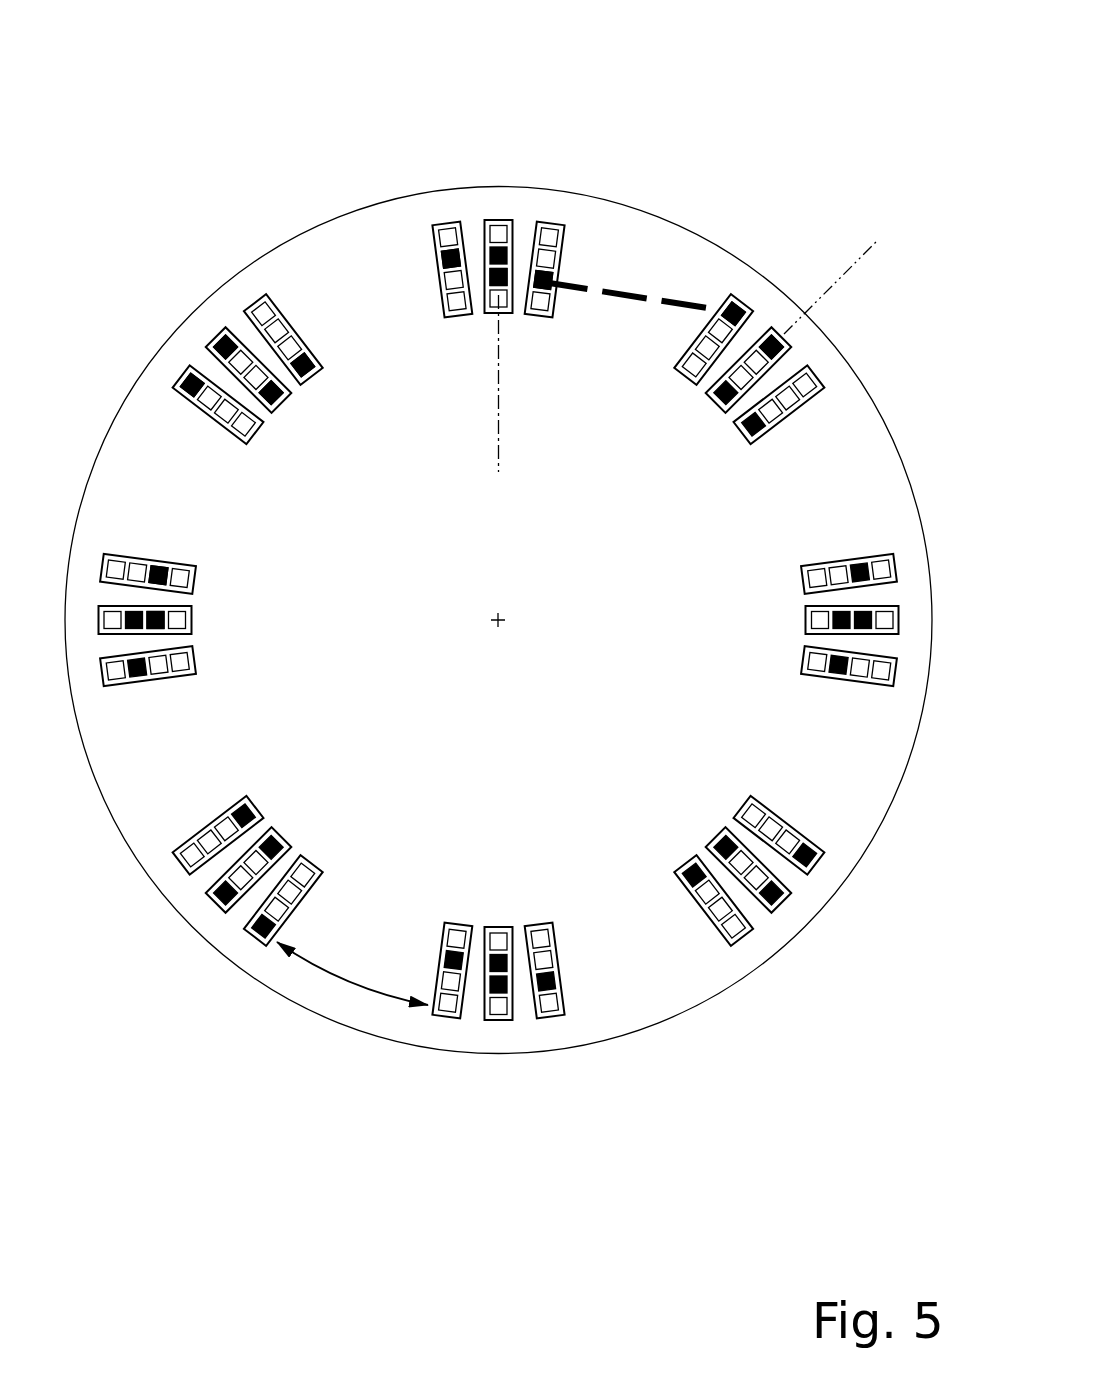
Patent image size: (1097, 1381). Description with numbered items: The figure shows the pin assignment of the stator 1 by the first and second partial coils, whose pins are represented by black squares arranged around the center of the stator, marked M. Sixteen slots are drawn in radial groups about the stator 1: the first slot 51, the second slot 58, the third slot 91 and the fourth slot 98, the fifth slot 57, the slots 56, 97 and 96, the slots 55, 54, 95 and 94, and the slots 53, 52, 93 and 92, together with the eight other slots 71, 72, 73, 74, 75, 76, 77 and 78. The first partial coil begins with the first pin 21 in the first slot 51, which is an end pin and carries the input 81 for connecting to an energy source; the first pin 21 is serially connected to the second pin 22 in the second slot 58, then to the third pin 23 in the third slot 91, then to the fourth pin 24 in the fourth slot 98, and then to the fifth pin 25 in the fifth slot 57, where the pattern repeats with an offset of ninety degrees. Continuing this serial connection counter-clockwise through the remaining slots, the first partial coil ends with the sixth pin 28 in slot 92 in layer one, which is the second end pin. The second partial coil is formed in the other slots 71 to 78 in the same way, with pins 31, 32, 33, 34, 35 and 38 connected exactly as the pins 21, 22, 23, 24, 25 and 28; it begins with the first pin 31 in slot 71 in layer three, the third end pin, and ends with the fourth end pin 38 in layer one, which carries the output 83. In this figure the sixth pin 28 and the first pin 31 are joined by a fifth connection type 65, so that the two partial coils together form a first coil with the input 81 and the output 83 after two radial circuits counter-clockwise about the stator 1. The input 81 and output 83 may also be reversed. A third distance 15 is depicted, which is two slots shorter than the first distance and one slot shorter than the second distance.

The stator 1 is at (594, 47).
The center point M is at (505, 632).
The third distance 15 is at (320, 973).
The first pin 21 is at (504, 288).
The second pin 22 is at (277, 402).
The third pin 23 is at (450, 268).
The fourth pin 24 is at (187, 394).
The fifth pin 25 is at (160, 612).
The sixth pin 28 is at (730, 304).
The first pin of second partial coil 31 is at (553, 296).
The pin 32 is at (308, 376).
The pin 33 is at (486, 224).
The pin 34 is at (215, 340).
The pin 35 is at (166, 574).
The fourth end pin 38 is at (760, 347).
The first slot 51 is at (521, 174).
The slot 52 is at (787, 330).
The slot 53 is at (908, 645).
The slot 54 is at (783, 903).
The slot 55 is at (507, 1025).
The slot 56 is at (213, 903).
The fifth slot 57 is at (100, 640).
The second slot 58 is at (217, 332).
The fifth connection type 65 is at (633, 297).
The slot 71 is at (567, 215).
The slot 72 is at (822, 368).
The slot 73 is at (873, 693).
The slot 74 is at (741, 938).
The slot 75 is at (445, 1020).
The slot 76 is at (178, 868).
The slot 77 is at (125, 547).
The slot 78 is at (255, 297).
The input 81 is at (500, 433).
The output 83 is at (835, 345).
The third slot 91 is at (443, 215).
The slot 92 is at (745, 297).
The slot 93 is at (877, 550).
The slot 94 is at (818, 868).
The slot 95 is at (565, 1022).
The slot 96 is at (255, 938).
The slot 97 is at (138, 687).
The fourth slot 98 is at (180, 373).